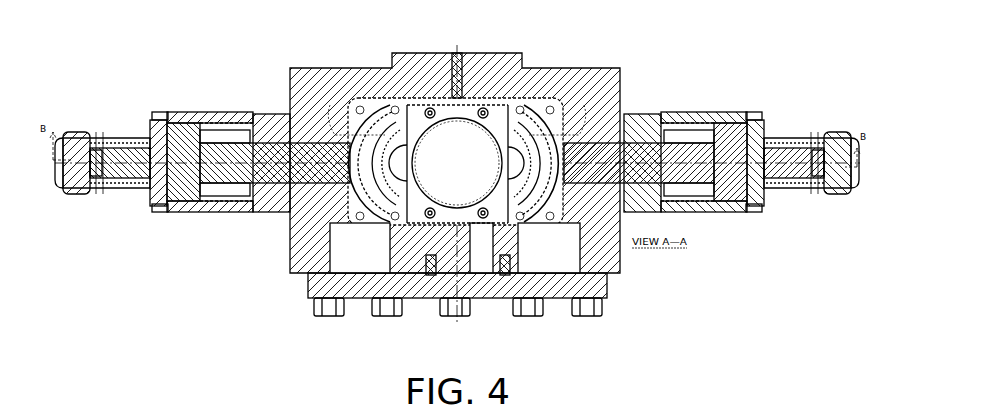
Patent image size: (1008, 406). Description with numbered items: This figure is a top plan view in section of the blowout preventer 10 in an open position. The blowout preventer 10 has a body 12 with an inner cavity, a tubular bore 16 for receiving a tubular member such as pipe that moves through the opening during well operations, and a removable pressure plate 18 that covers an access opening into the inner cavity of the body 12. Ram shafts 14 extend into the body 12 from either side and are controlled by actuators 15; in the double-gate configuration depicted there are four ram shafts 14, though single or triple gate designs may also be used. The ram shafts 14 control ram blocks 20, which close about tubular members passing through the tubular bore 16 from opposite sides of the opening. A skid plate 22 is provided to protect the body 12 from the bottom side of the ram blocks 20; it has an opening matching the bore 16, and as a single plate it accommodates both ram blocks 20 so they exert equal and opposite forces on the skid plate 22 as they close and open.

The blowout preventer 10 is at (193, 102).
The body 12 is at (622, 85).
The ram shafts 14 is at (220, 175).
The actuators 15 is at (245, 120).
The tubular bore 16 is at (447, 158).
The removable pressure plate 18 is at (310, 284).
The ram blocks 20 is at (355, 193).
The skid plate 22 is at (497, 117).